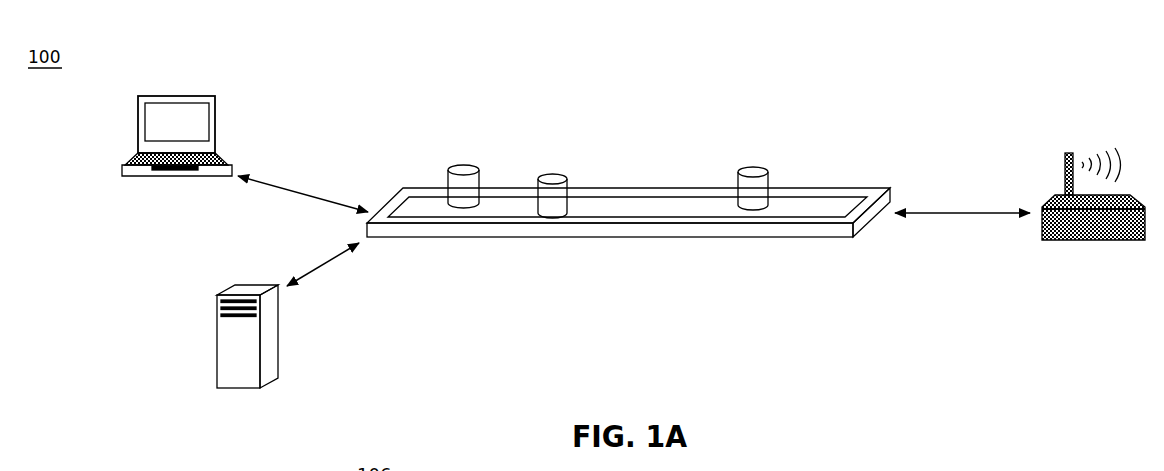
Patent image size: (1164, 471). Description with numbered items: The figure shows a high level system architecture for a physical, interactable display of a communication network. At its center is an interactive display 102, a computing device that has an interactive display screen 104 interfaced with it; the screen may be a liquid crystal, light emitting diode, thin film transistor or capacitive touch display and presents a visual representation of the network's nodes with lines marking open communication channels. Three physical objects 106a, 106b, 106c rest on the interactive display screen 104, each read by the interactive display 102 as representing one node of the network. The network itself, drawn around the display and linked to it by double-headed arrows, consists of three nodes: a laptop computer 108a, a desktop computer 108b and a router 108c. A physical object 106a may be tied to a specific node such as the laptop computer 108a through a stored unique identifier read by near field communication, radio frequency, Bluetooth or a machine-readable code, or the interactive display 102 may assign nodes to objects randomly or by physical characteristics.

The interactive display 102 is at (805, 238).
The interactive display screen 104 is at (817, 195).
The physical object 106a is at (462, 165).
The physical object 106b is at (552, 175).
The physical object 106c is at (757, 168).
The laptop computer 108a is at (215, 125).
The desktop computer 108b is at (215, 322).
The router 108c is at (1093, 240).